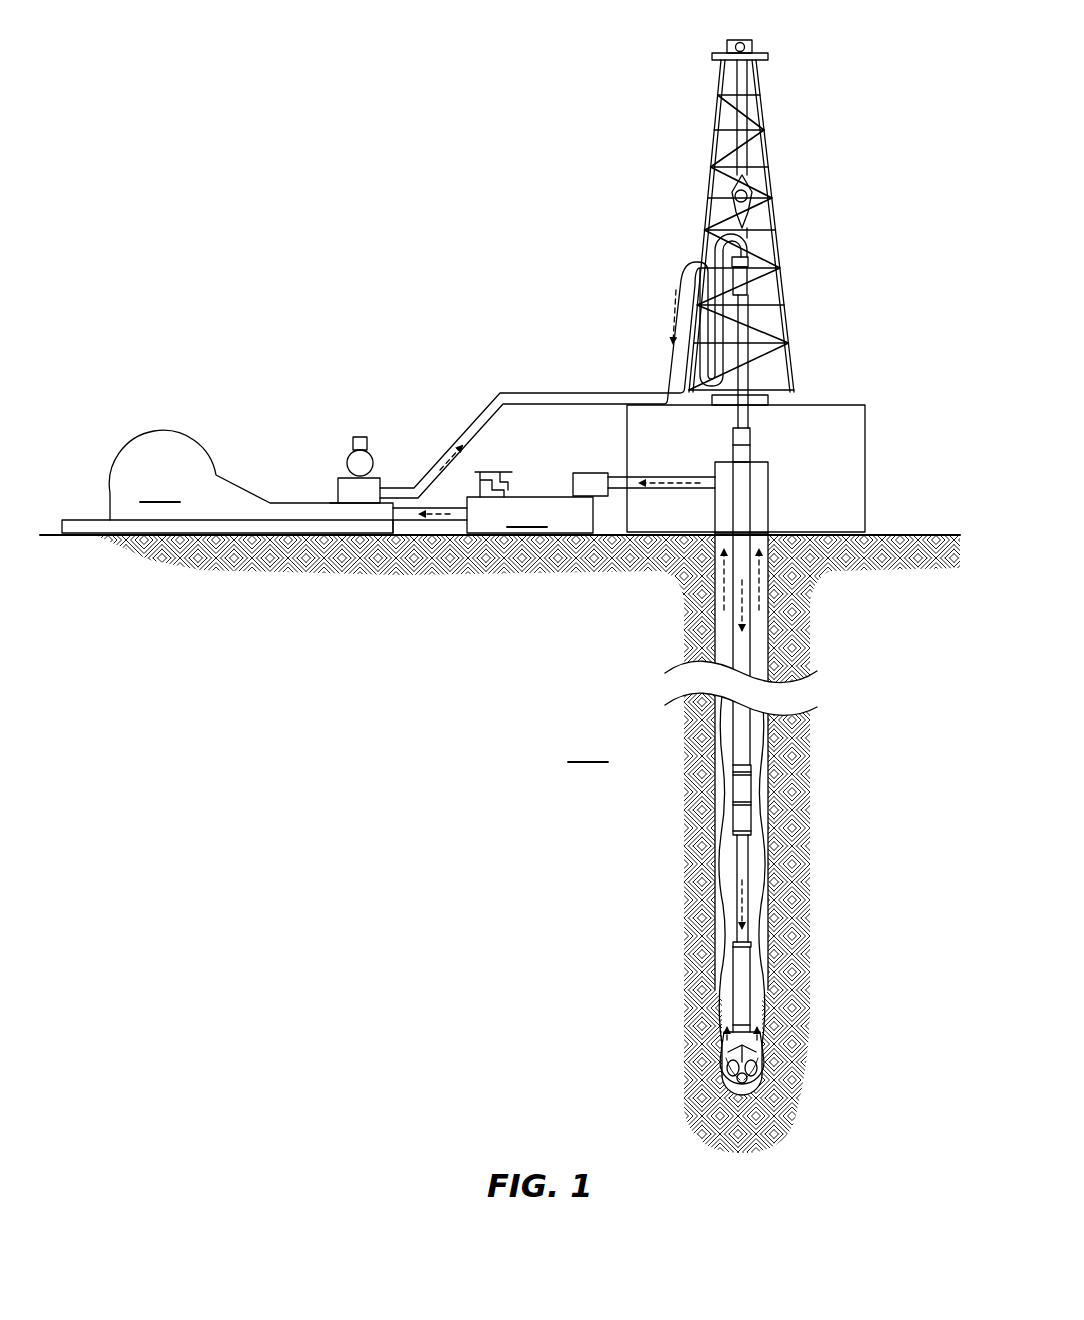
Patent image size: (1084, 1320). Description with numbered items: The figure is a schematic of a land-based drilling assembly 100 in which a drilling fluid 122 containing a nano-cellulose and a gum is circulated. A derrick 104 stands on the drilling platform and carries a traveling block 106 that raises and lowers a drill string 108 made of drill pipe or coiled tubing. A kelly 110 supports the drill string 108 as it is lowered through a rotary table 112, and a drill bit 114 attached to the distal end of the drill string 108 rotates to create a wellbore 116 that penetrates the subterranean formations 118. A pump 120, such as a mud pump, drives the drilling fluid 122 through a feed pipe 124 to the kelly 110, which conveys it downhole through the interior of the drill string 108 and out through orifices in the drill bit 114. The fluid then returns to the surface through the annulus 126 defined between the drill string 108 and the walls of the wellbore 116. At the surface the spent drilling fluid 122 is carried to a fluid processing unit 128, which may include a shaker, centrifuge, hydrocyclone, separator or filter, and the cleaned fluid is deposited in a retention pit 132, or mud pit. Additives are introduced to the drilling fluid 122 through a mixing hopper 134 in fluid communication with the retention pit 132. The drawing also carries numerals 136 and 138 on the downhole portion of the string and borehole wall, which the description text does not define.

The drilling assembly 100 is at (465, 126).
The derrick 104 is at (772, 147).
The traveling block 106 is at (756, 193).
The drill string 108 is at (752, 655).
The kelly 110 is at (758, 317).
The rotary table 112 is at (776, 400).
The drill bit 114 is at (760, 1070).
The wellbore 116 is at (775, 739).
The subterranean formations 118 is at (500, 844).
The pump 120 is at (224, 475).
The drilling fluid 122 is at (407, 490).
The feed pipe 124 is at (520, 393).
The annulus 126 is at (766, 920).
The fluid processing unit 128 is at (597, 472).
The retention pit 132 is at (465, 485).
The mixing hopper 134 is at (490, 472).
The downhole tool 136 is at (720, 835).
The wellbore wall 138 is at (712, 905).